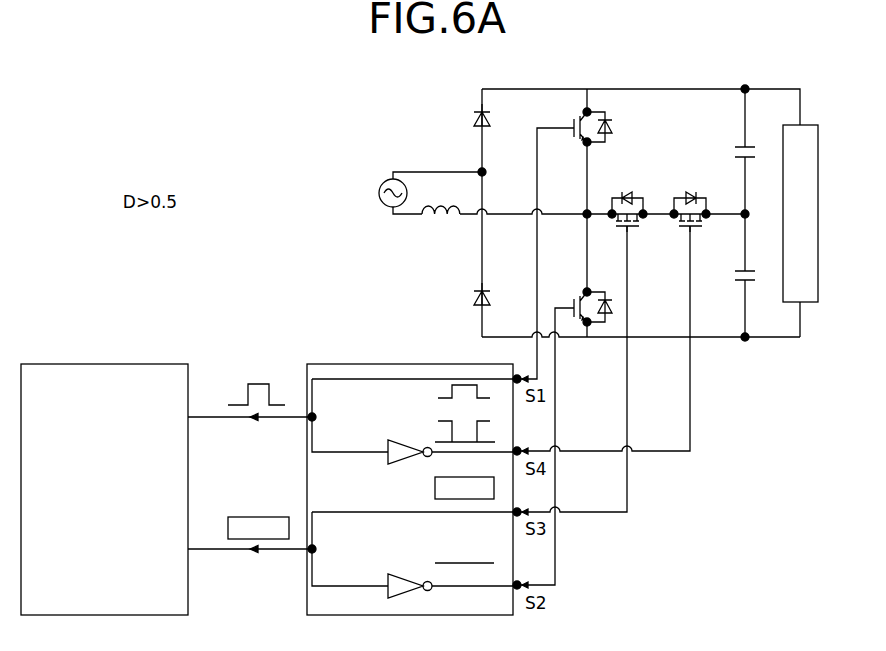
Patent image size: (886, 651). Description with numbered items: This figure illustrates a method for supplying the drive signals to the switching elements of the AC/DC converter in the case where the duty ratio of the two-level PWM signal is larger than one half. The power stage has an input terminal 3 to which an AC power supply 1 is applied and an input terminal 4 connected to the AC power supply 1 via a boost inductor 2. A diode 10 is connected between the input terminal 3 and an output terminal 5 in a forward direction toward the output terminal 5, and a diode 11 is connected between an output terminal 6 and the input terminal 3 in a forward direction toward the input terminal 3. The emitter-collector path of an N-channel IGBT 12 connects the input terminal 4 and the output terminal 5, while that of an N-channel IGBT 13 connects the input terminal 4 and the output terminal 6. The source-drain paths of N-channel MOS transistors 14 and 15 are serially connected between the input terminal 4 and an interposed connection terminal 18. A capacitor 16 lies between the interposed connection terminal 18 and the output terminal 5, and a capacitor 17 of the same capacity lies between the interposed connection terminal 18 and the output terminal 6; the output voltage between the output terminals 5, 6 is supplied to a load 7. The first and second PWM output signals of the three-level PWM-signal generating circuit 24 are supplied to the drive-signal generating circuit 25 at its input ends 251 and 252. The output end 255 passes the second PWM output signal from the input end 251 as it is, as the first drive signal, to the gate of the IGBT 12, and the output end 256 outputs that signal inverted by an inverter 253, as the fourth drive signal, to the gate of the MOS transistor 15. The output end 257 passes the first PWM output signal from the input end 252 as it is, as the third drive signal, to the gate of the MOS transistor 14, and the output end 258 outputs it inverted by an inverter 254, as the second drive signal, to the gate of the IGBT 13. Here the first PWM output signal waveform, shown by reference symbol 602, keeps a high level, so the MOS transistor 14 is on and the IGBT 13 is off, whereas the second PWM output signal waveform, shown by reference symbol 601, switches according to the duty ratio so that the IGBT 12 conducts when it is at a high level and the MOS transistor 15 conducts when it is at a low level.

The AC power supply 1 is at (384, 183).
The boost inductor 2 is at (437, 199).
The input terminal 3 is at (487, 172).
The input terminal 4 is at (584, 213).
The output terminal 5 is at (748, 87).
The output terminal 6 is at (745, 342).
The load 7 is at (819, 182).
The diode 10 is at (491, 116).
The diode 11 is at (491, 295).
The N-channel IGBT 12 is at (582, 136).
The N-channel IGBT 13 is at (582, 298).
The N-channel MOS transistor 14 is at (620, 228).
The N-channel MOS transistor 15 is at (682, 229).
The capacitor 16 is at (757, 152).
The capacitor 17 is at (759, 276).
The interposed connection terminal 18 is at (749, 216).
The three-level PWM-signal generating circuit 24 is at (161, 364).
The drive-signal generating circuit 25 is at (344, 364).
The input end 251 is at (309, 420).
The input end 252 is at (309, 552).
The inverter 253 is at (405, 442).
The inverter 254 is at (405, 575).
The output end 255 is at (516, 376).
The output end 256 is at (519, 450).
The output end 257 is at (521, 510).
The output end 258 is at (519, 584).
The PWM output signal PWM2 601 is at (246, 394).
The PWM output signal PWM1 602 is at (229, 521).